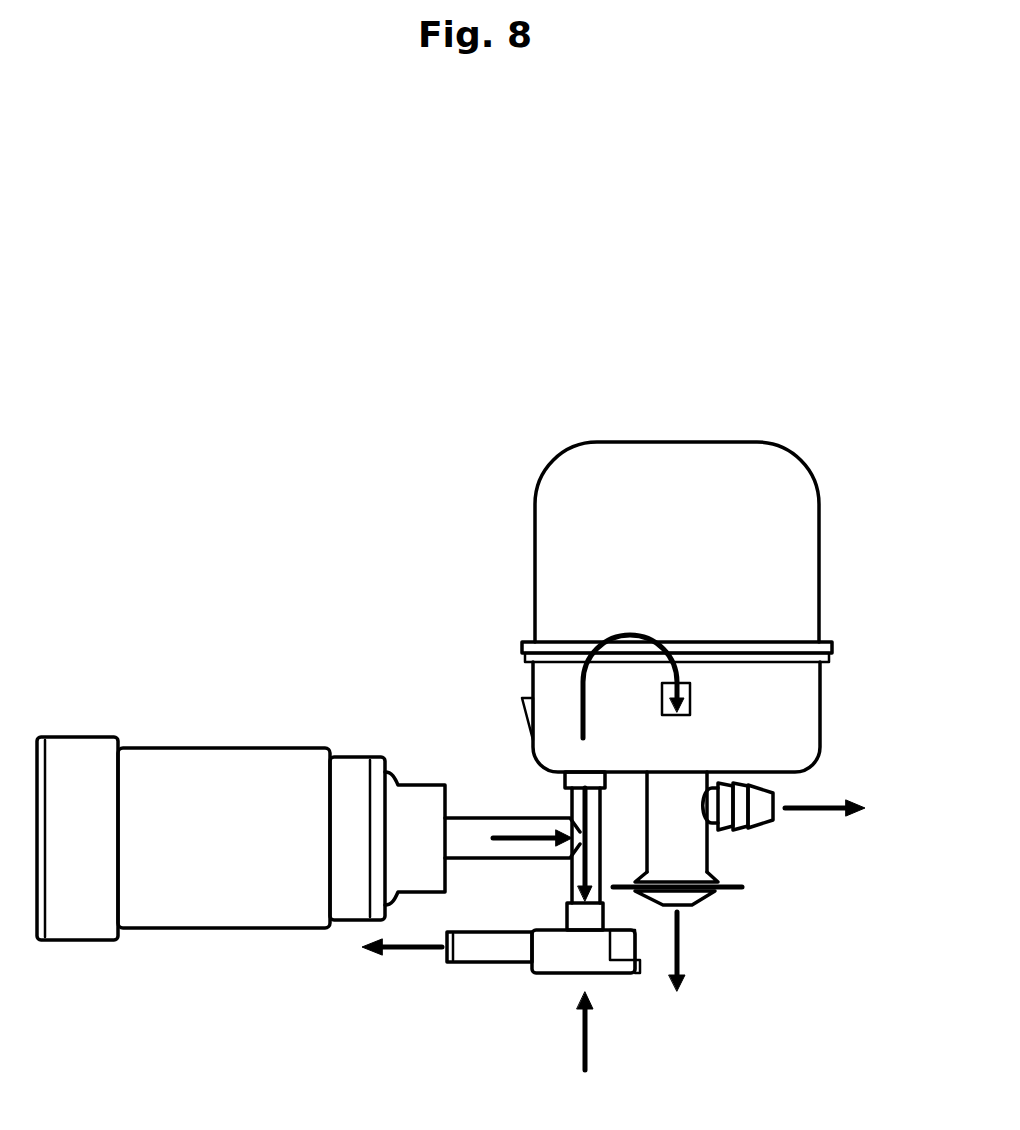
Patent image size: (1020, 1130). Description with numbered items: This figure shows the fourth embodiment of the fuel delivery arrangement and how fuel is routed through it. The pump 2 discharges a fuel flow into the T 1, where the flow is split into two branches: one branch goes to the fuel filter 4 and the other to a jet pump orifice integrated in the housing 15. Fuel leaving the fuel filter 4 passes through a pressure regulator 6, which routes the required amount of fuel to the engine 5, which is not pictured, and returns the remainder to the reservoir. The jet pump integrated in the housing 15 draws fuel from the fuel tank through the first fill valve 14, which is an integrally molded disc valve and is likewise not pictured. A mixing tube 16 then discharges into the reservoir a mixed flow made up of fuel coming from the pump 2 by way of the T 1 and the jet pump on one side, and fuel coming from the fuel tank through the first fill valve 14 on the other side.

The T 1 is at (600, 830).
The pump 2 is at (182, 748).
The fuel filter 4 is at (820, 516).
The engine 5 is at (837, 809).
The pressure regulator 6 is at (710, 858).
The first fill valve 14 is at (587, 1049).
The housing 15 is at (628, 975).
The mixing tube 16 is at (475, 962).